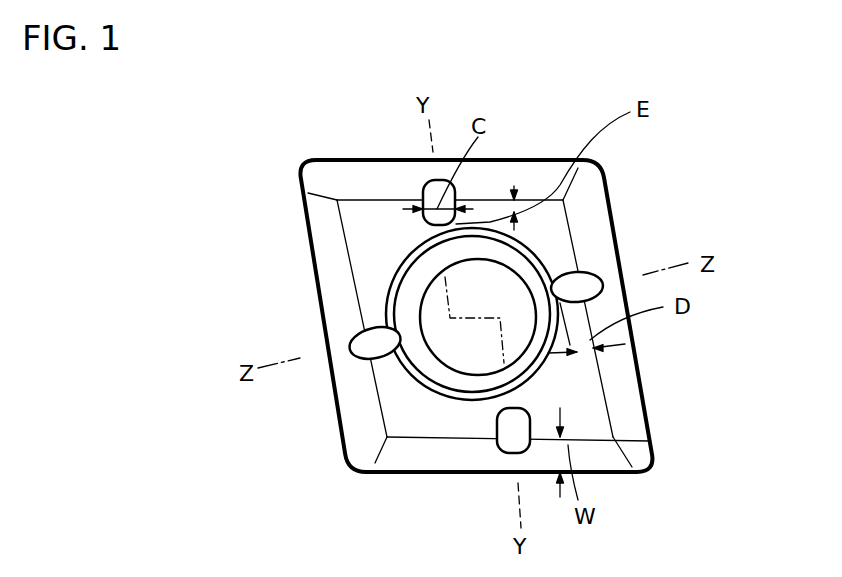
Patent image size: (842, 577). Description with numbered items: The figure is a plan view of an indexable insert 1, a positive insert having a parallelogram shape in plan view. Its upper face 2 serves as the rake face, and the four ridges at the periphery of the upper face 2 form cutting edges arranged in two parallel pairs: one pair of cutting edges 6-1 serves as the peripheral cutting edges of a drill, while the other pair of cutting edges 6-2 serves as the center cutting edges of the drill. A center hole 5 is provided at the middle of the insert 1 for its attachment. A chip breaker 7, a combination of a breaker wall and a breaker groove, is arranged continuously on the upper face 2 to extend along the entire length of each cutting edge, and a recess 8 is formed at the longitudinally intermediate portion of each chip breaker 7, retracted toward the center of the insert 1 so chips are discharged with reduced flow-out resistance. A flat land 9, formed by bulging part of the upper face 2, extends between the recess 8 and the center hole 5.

The indexable insert 1 is at (611, 186).
The upper face 2 is at (352, 218).
The center hole 5 is at (433, 323).
The cutting edges 6-1 is at (647, 508).
The cutting edges 6-2 is at (680, 353).
The chip breaker 7 is at (367, 180).
The recess 8 is at (370, 352).
The flat land 9 is at (577, 397).